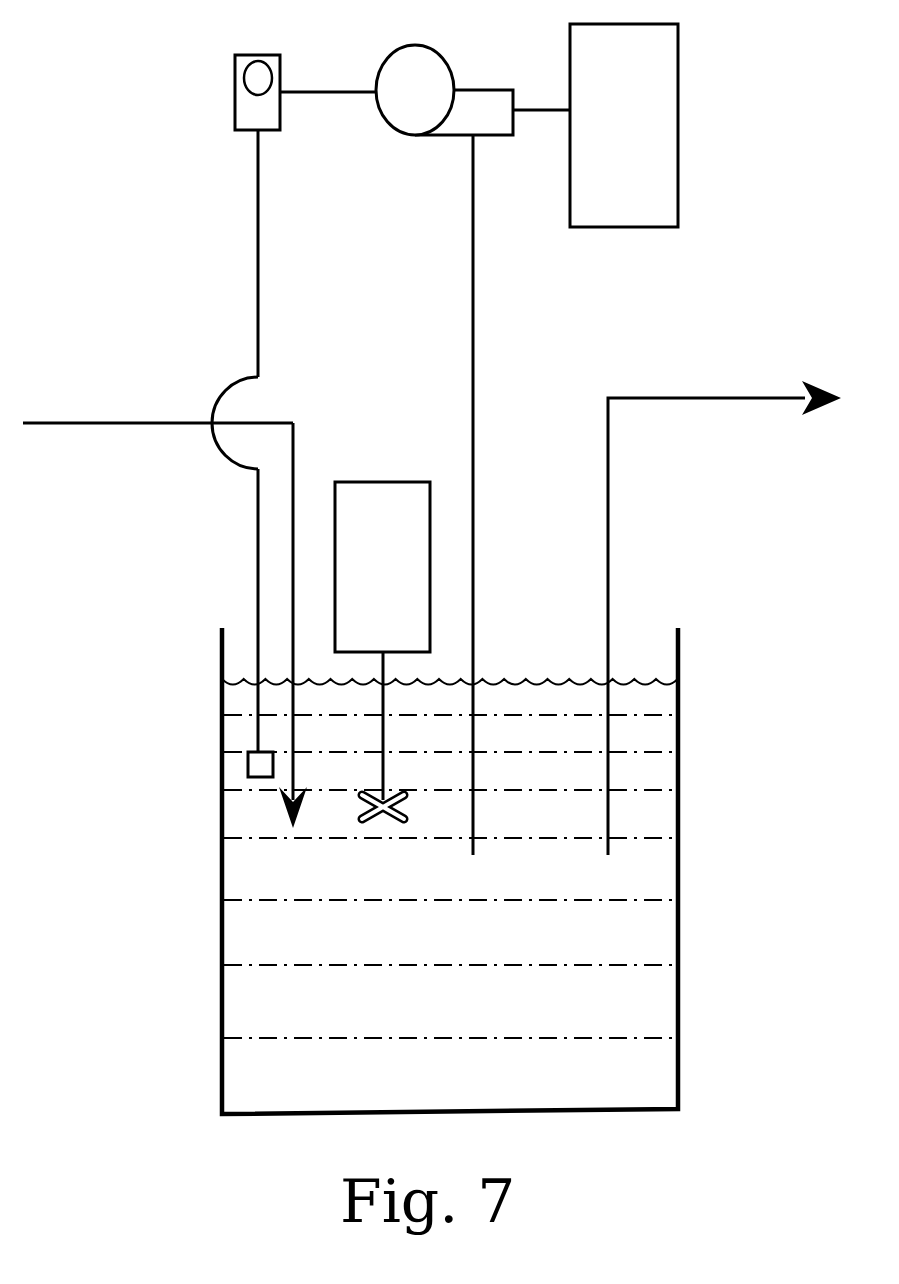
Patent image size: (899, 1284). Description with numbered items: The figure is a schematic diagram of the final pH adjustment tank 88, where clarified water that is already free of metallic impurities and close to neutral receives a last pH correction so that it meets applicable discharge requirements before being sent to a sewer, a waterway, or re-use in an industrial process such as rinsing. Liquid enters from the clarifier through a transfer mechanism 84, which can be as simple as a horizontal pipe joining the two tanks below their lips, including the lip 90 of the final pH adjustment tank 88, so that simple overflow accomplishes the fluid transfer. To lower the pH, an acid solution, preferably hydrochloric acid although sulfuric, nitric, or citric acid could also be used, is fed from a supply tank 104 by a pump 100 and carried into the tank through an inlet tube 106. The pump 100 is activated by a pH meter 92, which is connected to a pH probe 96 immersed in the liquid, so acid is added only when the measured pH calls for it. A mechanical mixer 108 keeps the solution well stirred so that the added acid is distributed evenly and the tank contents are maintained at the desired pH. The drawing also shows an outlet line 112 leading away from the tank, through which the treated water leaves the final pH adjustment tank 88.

The transfer mechanism 84 is at (118, 426).
The final pH adjustment tank 88 is at (150, 28).
The lip 90 is at (220, 655).
The pH meter 92 is at (245, 112).
The pH probe 96 is at (256, 245).
The pump 100 is at (410, 113).
The supply tank 104 is at (659, 135).
The inlet tube 106 is at (473, 323).
The mechanical mixer 108 is at (380, 501).
The outlet conduit 112 is at (700, 397).